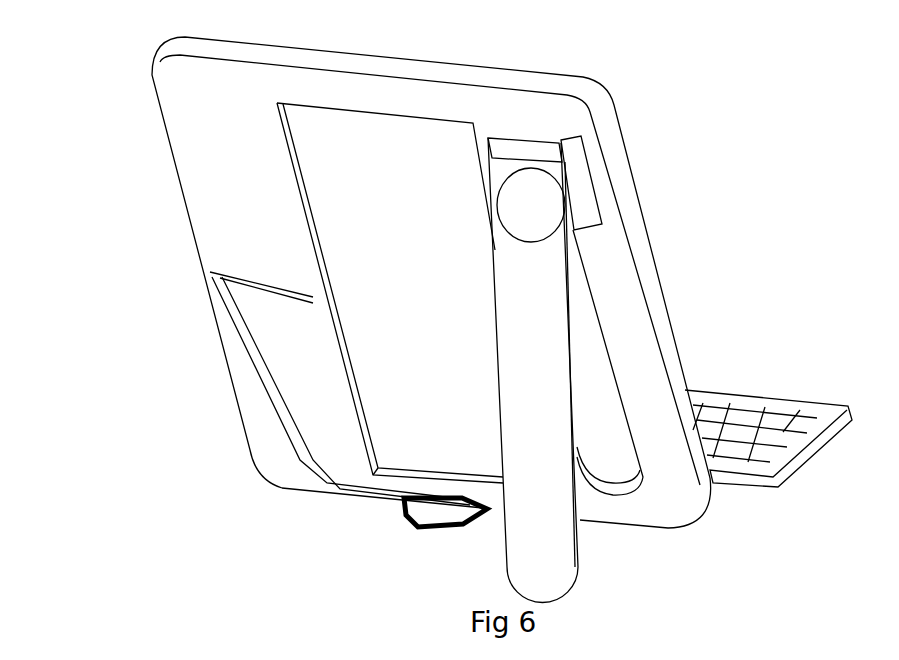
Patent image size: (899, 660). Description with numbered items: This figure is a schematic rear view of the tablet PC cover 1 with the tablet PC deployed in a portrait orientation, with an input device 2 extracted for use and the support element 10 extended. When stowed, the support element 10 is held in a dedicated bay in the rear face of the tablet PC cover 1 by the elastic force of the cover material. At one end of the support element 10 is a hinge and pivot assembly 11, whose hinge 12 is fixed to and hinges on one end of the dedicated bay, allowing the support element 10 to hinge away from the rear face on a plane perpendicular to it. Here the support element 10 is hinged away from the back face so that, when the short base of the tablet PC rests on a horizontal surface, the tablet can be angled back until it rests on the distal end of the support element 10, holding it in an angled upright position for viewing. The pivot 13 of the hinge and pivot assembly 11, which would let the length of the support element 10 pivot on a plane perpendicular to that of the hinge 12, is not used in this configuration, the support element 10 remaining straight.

The tablet PC cover 1 is at (206, 103).
The keyboard 2 is at (829, 402).
The support element 10 is at (557, 302).
The hinge and pivot assembly 11 is at (592, 170).
The hinge 12 is at (546, 152).
The pivot 13 is at (556, 200).